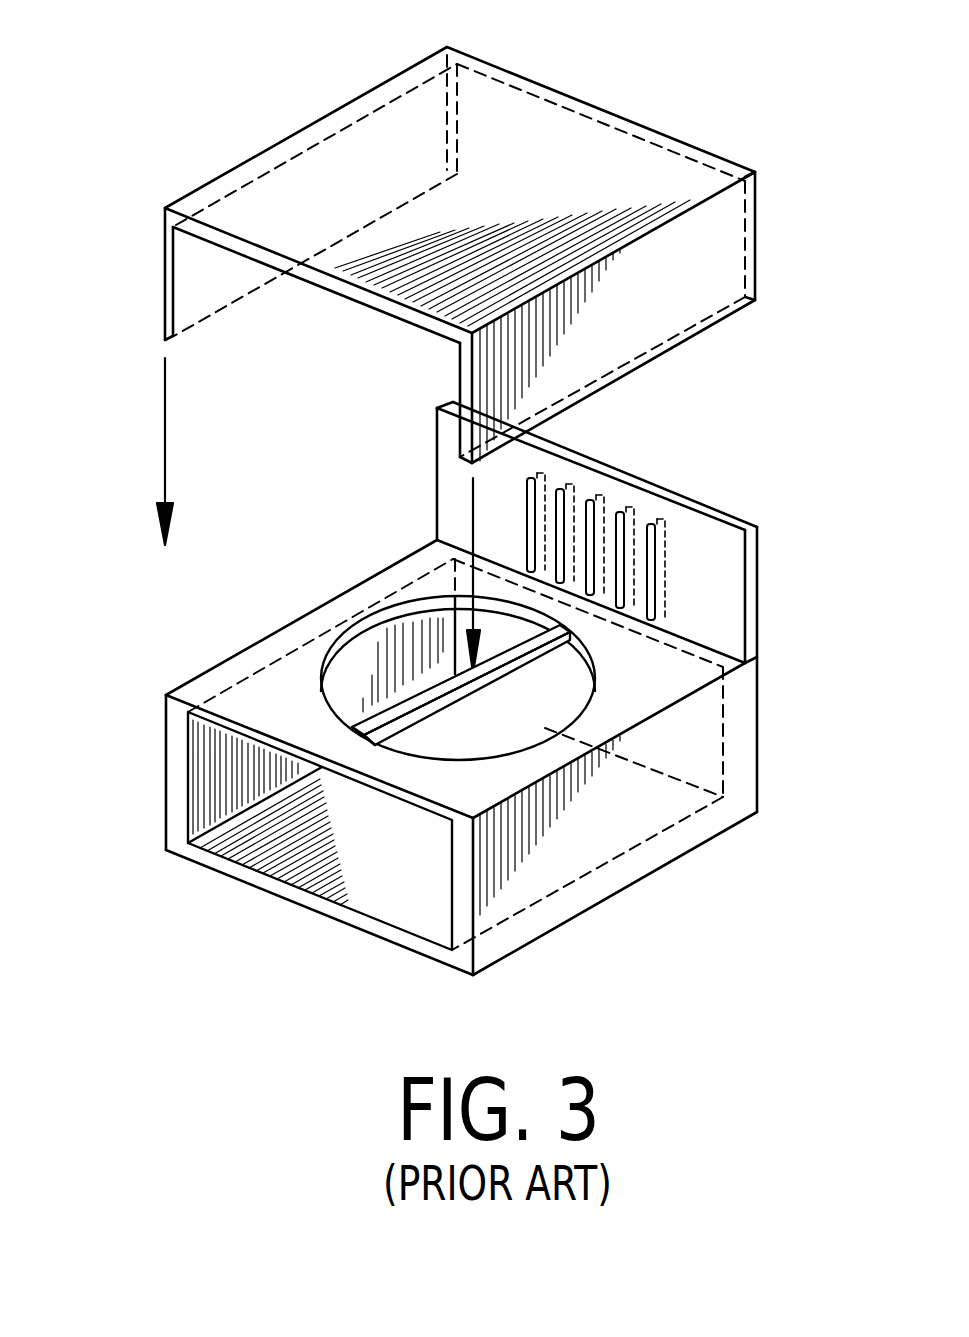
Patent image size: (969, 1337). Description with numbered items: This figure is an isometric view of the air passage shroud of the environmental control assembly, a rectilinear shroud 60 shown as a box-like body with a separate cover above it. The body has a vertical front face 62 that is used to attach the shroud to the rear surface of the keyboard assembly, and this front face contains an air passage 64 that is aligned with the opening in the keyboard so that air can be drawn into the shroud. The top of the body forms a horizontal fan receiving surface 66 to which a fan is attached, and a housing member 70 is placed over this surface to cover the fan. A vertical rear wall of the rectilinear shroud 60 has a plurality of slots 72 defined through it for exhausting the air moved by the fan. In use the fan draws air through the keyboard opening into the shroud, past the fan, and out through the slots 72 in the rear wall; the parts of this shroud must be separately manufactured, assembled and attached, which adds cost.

The rectilinear shroud 60 is at (345, 505).
The vertical front face 62 is at (402, 711).
The air passage 64 is at (390, 898).
The horizontal fan receiving surface 66 is at (248, 698).
The housing member 70 is at (730, 250).
The slots 72 is at (632, 500).